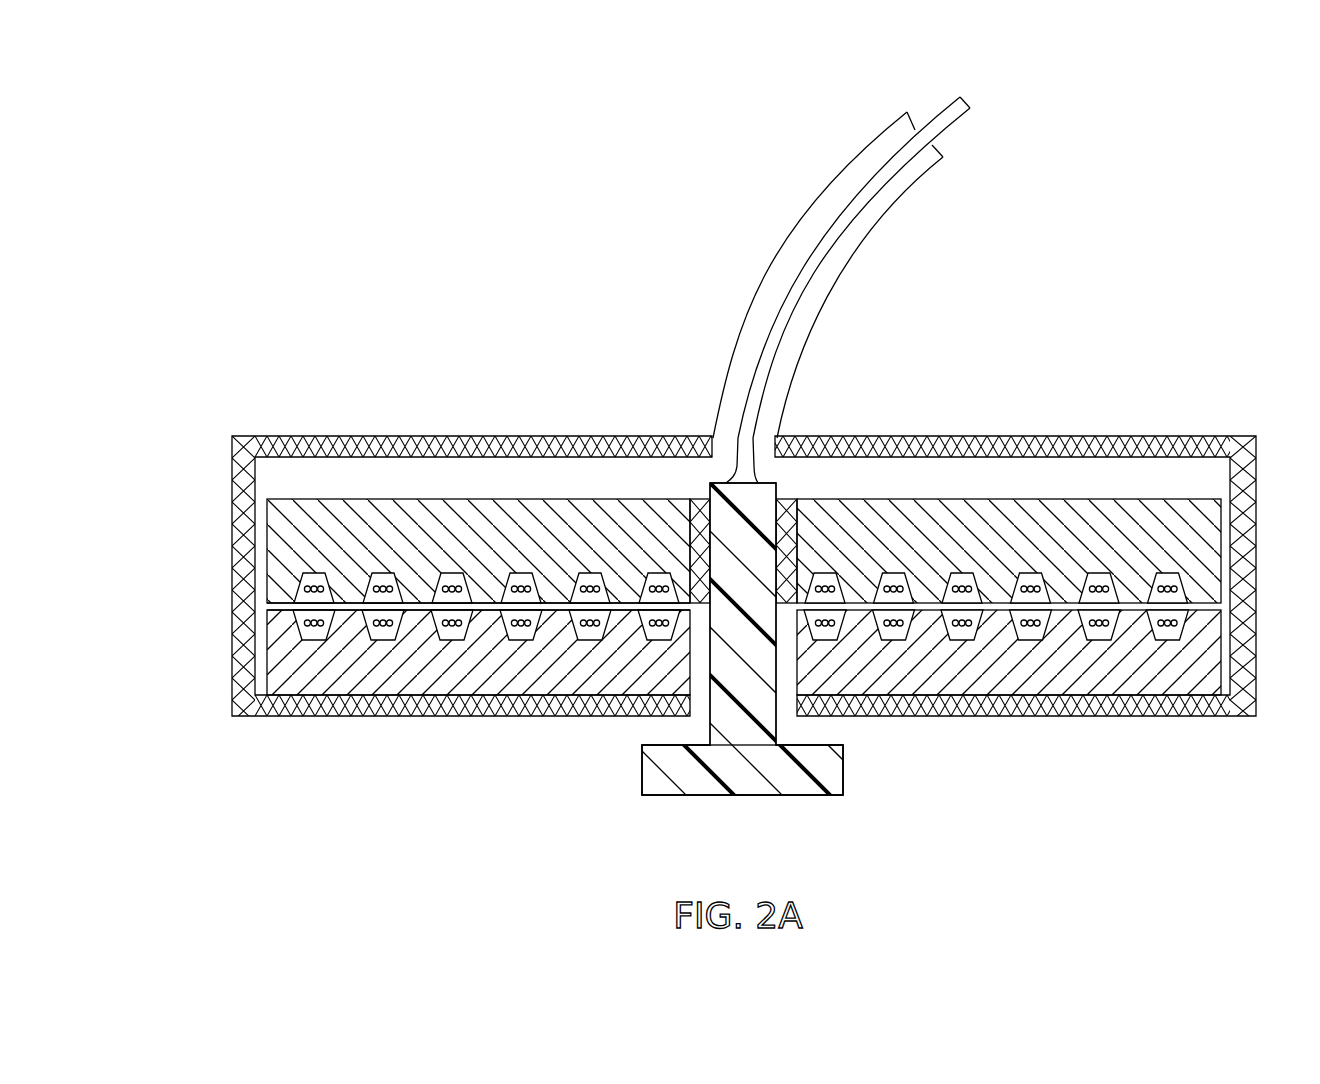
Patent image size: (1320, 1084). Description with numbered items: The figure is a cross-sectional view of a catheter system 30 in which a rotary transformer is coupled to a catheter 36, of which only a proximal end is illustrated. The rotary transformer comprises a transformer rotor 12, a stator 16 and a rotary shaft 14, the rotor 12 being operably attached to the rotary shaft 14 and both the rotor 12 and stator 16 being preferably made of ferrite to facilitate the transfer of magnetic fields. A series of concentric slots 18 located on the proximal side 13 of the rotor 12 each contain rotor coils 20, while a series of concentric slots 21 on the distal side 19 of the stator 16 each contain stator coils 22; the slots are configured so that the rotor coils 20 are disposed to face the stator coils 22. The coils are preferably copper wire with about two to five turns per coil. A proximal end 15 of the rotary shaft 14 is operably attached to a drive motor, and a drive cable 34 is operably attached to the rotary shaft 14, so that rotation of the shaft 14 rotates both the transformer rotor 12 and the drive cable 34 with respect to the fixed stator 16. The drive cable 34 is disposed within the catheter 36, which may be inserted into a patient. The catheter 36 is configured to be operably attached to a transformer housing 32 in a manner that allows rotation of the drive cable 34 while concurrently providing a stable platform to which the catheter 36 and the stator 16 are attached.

The catheter system 30 is at (506, 370).
The transformer housing 32 is at (991, 436).
The transformer rotor 12 is at (982, 499).
The rotor coils 20 is at (498, 569).
The stator 16 is at (1014, 682).
The stator coils 22 is at (468, 616).
The concentric slots 18 is at (314, 573).
The concentric slots 21 is at (316, 641).
The proximal side 13 is at (346, 605).
The distal side 19 is at (349, 612).
The rotary shaft 14 is at (752, 518).
The proximal end 15 is at (795, 795).
The drive cable 34 is at (952, 108).
The catheter 36 is at (920, 180).